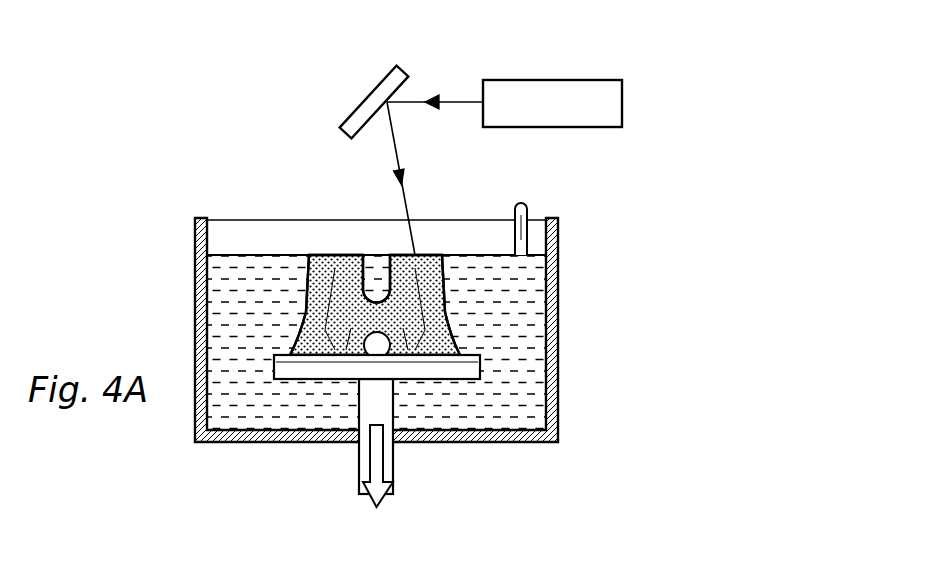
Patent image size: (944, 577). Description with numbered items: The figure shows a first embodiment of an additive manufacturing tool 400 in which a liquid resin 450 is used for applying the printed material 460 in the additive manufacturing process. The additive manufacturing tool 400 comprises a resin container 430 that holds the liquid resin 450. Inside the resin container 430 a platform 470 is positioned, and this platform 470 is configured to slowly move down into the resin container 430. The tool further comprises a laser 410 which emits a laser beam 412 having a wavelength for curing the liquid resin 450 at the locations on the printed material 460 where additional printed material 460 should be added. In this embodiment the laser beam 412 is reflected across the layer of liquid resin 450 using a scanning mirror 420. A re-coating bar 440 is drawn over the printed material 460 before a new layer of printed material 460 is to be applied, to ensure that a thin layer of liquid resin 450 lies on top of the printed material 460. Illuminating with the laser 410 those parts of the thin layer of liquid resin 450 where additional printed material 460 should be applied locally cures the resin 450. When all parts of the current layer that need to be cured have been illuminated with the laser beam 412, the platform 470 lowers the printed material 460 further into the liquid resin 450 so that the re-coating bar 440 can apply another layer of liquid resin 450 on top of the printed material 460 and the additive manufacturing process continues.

The additive manufacturing tool 400 is at (171, 138).
The laser 410 is at (555, 95).
The laser beam 412 is at (403, 193).
The scanning mirror 420 is at (371, 96).
The resin container 430 is at (548, 322).
The re-coating bar 440 is at (523, 230).
The liquid resin 450 is at (256, 272).
The printed material 460 is at (342, 275).
The platform 470 is at (480, 369).